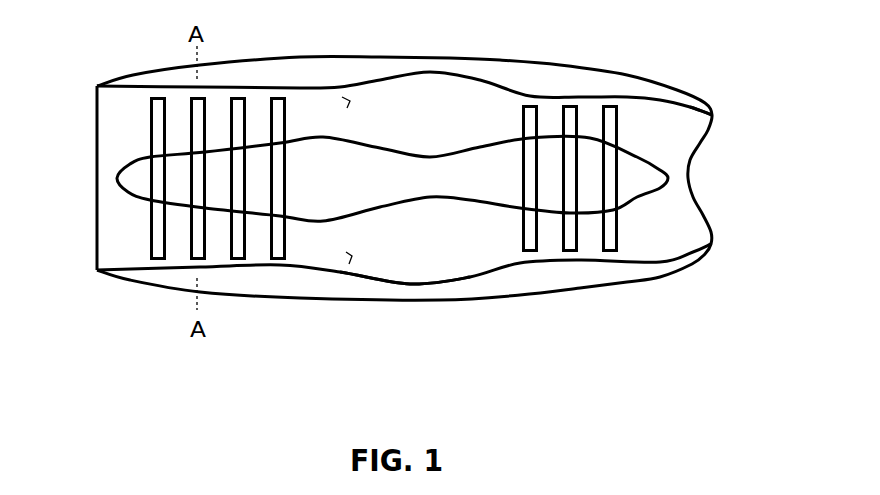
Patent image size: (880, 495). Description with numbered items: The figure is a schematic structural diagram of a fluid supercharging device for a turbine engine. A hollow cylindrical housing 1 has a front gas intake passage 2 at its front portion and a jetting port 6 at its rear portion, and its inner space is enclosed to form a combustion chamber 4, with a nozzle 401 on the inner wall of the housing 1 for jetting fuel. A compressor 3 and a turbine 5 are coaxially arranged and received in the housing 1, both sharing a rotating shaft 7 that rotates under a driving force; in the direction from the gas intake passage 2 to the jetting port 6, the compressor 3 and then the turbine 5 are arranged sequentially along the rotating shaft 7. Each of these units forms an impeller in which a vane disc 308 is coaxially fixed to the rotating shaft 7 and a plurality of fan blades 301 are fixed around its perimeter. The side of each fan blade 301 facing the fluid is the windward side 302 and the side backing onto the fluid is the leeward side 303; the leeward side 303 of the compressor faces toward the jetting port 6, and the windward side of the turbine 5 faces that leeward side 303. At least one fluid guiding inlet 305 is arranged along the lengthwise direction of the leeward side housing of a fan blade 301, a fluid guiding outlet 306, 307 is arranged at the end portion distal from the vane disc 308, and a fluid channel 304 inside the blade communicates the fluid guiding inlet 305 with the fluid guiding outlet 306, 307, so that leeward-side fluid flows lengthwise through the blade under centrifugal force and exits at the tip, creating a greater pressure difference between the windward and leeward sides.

The housing 1 is at (440, 56).
The front gas intake passage 2 is at (97, 137).
The compressor 3 is at (185, 258).
The fan blade 301 is at (203, 232).
The windward side 302 is at (520, 207).
The leeward side 303 is at (229, 255).
The fluid channel 304 is at (150, 107).
The fluid guiding inlet 305 is at (247, 195).
The fluid guiding outlet 306 is at (158, 118).
The fluid guiding outlet 307 is at (580, 110).
The vane disc 308 is at (160, 200).
The combustion chamber 4 is at (398, 252).
The nozzle 401 is at (350, 100).
The turbine 5 is at (610, 130).
The jetting port 6 is at (711, 113).
The rotating shaft 7 is at (430, 178).